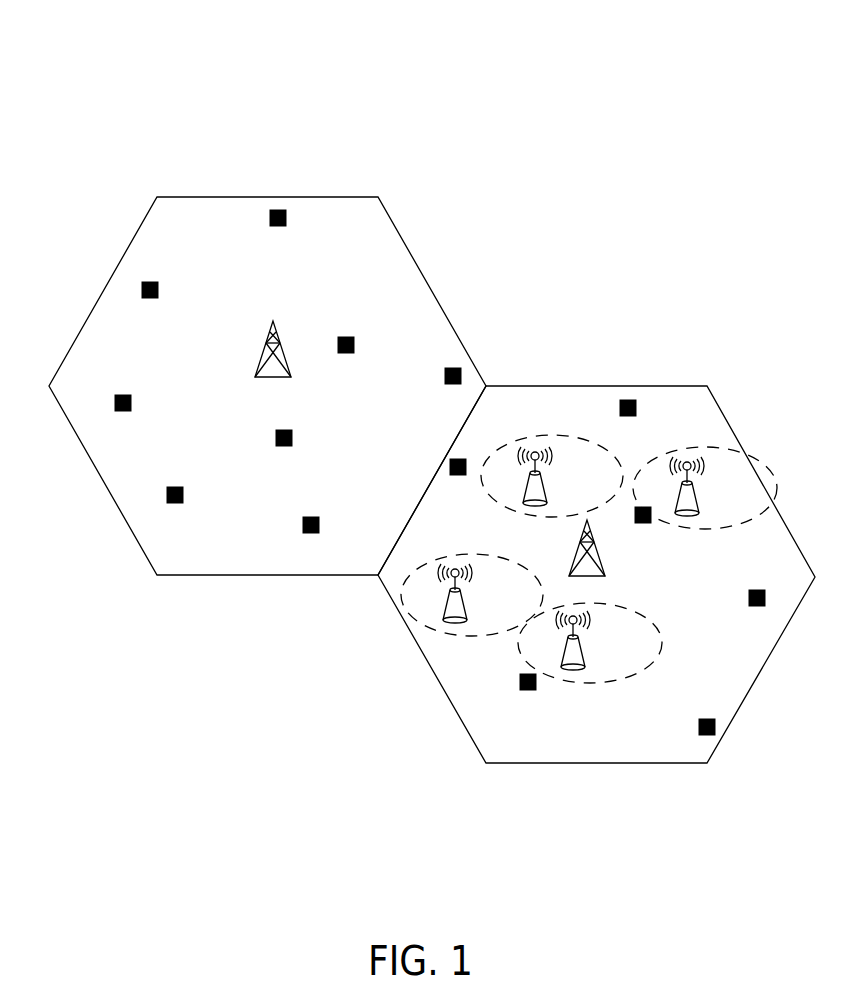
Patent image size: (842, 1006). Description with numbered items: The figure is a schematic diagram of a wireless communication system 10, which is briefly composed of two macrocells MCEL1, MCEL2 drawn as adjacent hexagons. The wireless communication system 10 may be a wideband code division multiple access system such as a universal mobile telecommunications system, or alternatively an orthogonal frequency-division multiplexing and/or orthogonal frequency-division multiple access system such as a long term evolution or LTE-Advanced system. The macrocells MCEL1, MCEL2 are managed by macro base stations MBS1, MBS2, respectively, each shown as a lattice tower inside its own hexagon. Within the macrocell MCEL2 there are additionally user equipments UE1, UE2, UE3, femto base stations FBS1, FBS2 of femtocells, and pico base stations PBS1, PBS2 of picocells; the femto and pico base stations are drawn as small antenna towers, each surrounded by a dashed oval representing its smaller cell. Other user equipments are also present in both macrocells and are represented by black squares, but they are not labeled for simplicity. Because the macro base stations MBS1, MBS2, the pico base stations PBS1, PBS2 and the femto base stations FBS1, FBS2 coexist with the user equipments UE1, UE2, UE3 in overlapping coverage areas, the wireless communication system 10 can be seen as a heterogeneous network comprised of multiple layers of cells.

The wireless communication system 10 is at (663, 98).
The macrocell MCEL1 is at (267, 368).
The macrocell MCEL2 is at (596, 592).
The macro base station MBS1 is at (273, 367).
The macro base station MBS2 is at (625, 554).
The pico base station PBS1 is at (552, 476).
The pico base station PBS2 is at (705, 488).
The femto base station FBS1 is at (472, 595).
The femto base station FBS2 is at (590, 643).
The user equipment UE1 is at (455, 483).
The user equipment UE2 is at (524, 695).
The user equipment UE3 is at (639, 532).